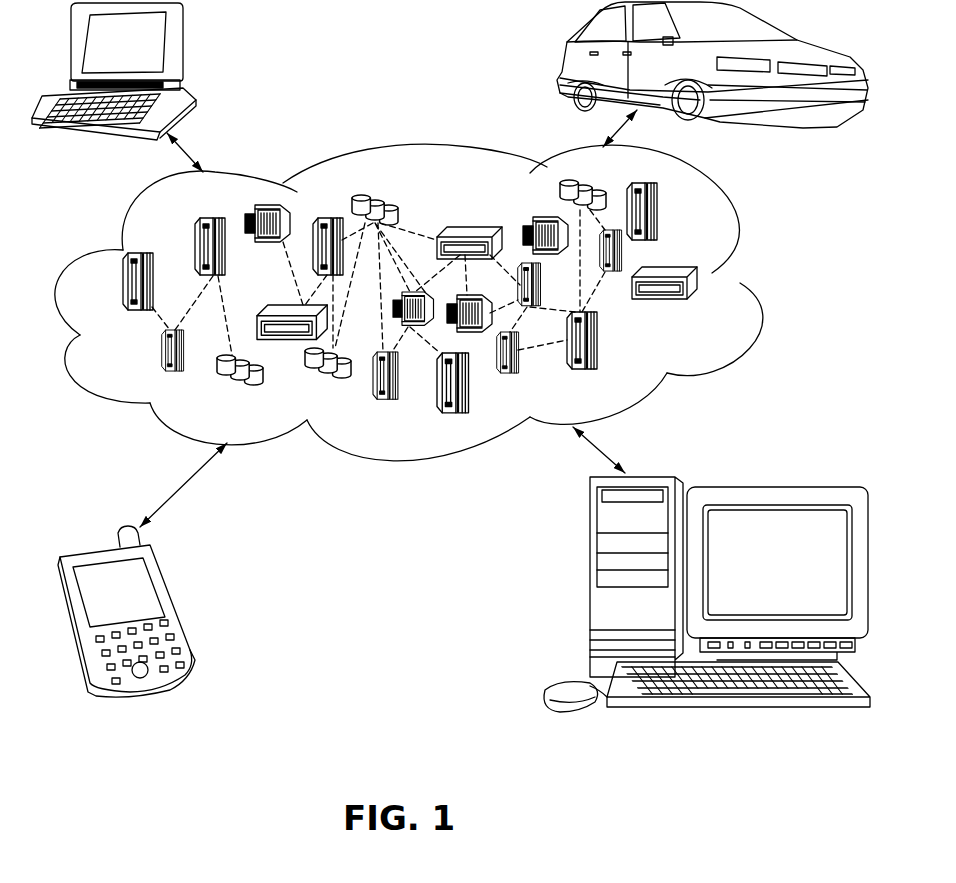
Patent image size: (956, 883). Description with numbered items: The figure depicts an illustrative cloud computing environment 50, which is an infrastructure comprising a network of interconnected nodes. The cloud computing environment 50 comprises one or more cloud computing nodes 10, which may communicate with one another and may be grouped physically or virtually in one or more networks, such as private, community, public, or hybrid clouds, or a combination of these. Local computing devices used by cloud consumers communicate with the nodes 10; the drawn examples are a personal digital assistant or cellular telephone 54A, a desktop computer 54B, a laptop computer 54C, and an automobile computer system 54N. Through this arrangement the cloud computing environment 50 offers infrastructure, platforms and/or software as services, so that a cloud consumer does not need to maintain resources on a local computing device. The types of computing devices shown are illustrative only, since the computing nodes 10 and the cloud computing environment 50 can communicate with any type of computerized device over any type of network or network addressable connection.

The cloud computing node 10 is at (735, 305).
The cloud computing environment 50 is at (743, 243).
The personal digital assistant (PDA) or cellular telephone 54A is at (172, 602).
The desktop computer 54B is at (588, 582).
The laptop computer 54C is at (185, 50).
The automobile computer system 54N is at (568, 50).